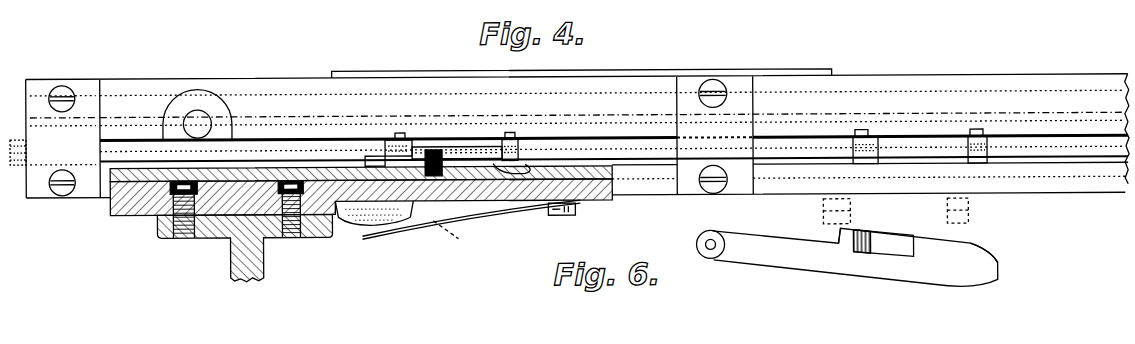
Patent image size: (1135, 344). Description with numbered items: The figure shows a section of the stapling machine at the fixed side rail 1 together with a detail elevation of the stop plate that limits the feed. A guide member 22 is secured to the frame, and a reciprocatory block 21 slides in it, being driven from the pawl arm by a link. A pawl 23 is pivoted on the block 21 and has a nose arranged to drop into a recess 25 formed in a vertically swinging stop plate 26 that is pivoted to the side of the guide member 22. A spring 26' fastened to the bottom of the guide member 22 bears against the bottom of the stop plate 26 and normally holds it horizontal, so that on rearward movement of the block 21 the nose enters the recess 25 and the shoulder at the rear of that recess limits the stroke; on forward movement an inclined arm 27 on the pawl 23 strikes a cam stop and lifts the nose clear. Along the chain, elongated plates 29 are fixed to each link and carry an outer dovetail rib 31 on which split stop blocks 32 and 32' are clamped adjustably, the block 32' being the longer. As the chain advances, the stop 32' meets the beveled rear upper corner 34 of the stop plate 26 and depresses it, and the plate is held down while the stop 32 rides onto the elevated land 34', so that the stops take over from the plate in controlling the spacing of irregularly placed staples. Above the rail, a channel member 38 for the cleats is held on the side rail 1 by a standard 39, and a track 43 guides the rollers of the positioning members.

In FIG. 4, the side rail 1 is at (104, 197).
In FIG. 4, the reciprocatory block 21 is at (530, 165).
In FIG. 4, the guide member 22 is at (596, 180).
In FIG. 4, the pawl 23 is at (378, 159).
In FIG. 6, the recess 25 is at (883, 242).
In FIG. 4, the stop plate 26 is at (461, 232).
In FIG. 6, the stop plate 26 is at (846, 267).
In FIG. 4, the spring 26' is at (469, 233).
In FIG. 4, the inclined arm 27 is at (463, 146).
In FIG. 4, the elongated plate 29 is at (118, 138).
In FIG. 4, the dovetail rib 31 is at (298, 146).
In FIG. 4, the split stop block 32 is at (744, 128).
In FIG. 6, the split stop block 32 is at (973, 210).
In FIG. 4, the split stop block 32' is at (629, 131).
In FIG. 6, the split stop block 32' is at (860, 210).
In FIG. 6, the beveled corner 34 is at (992, 245).
In FIG. 6, the elevated land 34' is at (885, 224).
In FIG. 4, the channel member 38 is at (206, 86).
In FIG. 4, the standard 39 is at (80, 82).
In FIG. 4, the track 43 is at (685, 69).